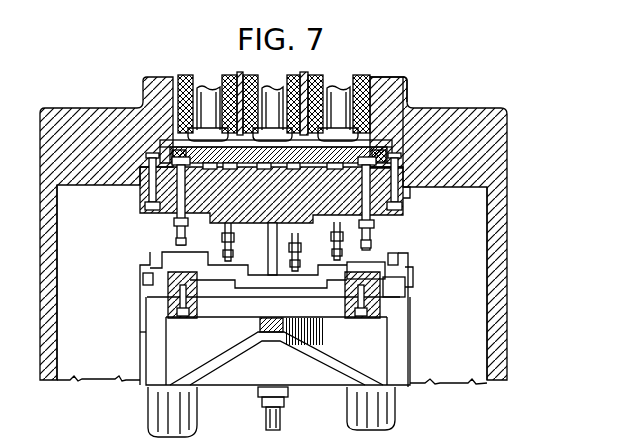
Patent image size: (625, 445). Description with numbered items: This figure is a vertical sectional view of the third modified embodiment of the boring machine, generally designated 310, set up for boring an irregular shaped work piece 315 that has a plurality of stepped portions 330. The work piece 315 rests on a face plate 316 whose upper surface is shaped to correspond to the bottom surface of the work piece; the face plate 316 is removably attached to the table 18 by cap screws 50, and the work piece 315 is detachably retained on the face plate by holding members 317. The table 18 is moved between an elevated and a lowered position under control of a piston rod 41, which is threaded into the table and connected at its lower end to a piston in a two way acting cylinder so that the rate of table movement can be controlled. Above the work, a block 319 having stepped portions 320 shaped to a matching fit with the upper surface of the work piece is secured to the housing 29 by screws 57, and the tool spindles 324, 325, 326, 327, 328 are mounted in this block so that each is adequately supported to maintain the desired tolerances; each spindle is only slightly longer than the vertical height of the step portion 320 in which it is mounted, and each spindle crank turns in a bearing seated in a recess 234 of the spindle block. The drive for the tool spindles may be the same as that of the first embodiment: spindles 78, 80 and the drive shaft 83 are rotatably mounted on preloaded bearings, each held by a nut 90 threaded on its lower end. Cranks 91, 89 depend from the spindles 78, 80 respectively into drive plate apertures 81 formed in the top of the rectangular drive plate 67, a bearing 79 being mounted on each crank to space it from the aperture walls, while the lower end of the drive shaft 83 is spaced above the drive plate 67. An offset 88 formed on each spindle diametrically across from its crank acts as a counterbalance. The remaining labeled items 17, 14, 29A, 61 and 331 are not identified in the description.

The housing 17 is at (497, 125).
The base wall 14 is at (494, 322).
The housing 29 is at (409, 88).
The cavity portion 29A is at (118, 346).
The terminal block 61 is at (386, 122).
The spindle 78 is at (207, 108).
The drive shaft 83 is at (271, 108).
The spindle 80 is at (339, 108).
The offset 88 is at (173, 147).
The crank 89 is at (367, 141).
The nut 90 is at (327, 146).
The recess 234 is at (173, 160).
The block 319 is at (398, 172).
The screws 57 is at (406, 195).
The crank 91 is at (218, 153).
The bearing 79 is at (250, 157).
The drive plate 67 is at (286, 157).
The drive plate apertures 81 is at (320, 153).
The tool spindle 327 is at (183, 195).
The tool spindle 328 is at (362, 190).
The stepped portions 320 is at (364, 202).
The contact pin 331 is at (216, 200).
The tool spindle 326 is at (269, 244).
The tool spindle 325 is at (327, 205).
The tool spindle 324 is at (267, 270).
The stepped portions 330 is at (155, 266).
The third modified embodiment of the boring machine 310 is at (135, 298).
The work piece 315 is at (390, 258).
The holding members 317 is at (405, 270).
The face plate 316 is at (393, 290).
The cap screws 50 is at (349, 308).
The table 18 is at (370, 358).
The piston rod 41 is at (286, 412).